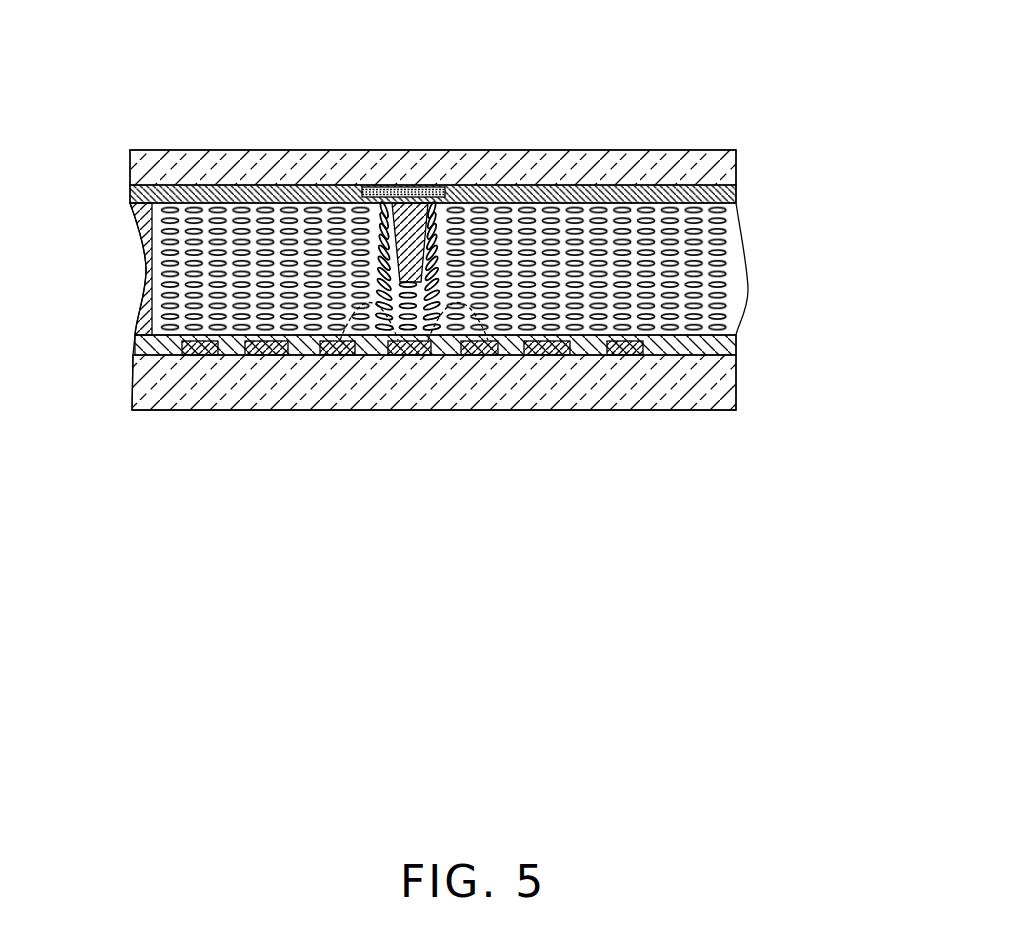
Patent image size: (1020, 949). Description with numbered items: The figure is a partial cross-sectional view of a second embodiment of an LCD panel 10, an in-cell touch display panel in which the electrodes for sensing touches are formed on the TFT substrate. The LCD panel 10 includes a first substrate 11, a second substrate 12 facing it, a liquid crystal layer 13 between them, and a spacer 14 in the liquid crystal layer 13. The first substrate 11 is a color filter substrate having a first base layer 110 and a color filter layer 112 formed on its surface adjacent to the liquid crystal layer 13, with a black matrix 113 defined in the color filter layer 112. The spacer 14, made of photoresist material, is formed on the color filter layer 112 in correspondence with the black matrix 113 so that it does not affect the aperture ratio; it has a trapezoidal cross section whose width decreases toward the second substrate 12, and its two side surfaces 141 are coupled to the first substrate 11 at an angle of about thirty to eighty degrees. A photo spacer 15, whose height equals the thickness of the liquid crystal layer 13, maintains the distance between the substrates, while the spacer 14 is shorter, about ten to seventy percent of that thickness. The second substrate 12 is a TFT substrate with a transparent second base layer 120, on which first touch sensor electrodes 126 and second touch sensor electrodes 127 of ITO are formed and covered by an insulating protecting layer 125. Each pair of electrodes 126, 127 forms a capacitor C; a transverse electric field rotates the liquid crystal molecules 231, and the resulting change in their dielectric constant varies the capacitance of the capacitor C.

The LCD panel 10 is at (466, 58).
The first substrate 11 is at (481, 139).
The first base layer 110 is at (695, 170).
The color filter layer 112 is at (738, 192).
The black matrix 113 is at (397, 186).
The second substrate 12 is at (447, 406).
The second base layer 120 is at (720, 377).
The protecting layer 125 is at (727, 344).
The first touch sensor electrode 126 is at (338, 355).
The second touch sensor electrode 127 is at (405, 355).
The liquid crystal layer 13 is at (475, 216).
The liquid crystal molecule 231 is at (489, 217).
The spacer 14 is at (421, 200).
The side surface 141 is at (386, 215).
The photo spacer 15 is at (136, 233).
The capacitor C is at (437, 355).